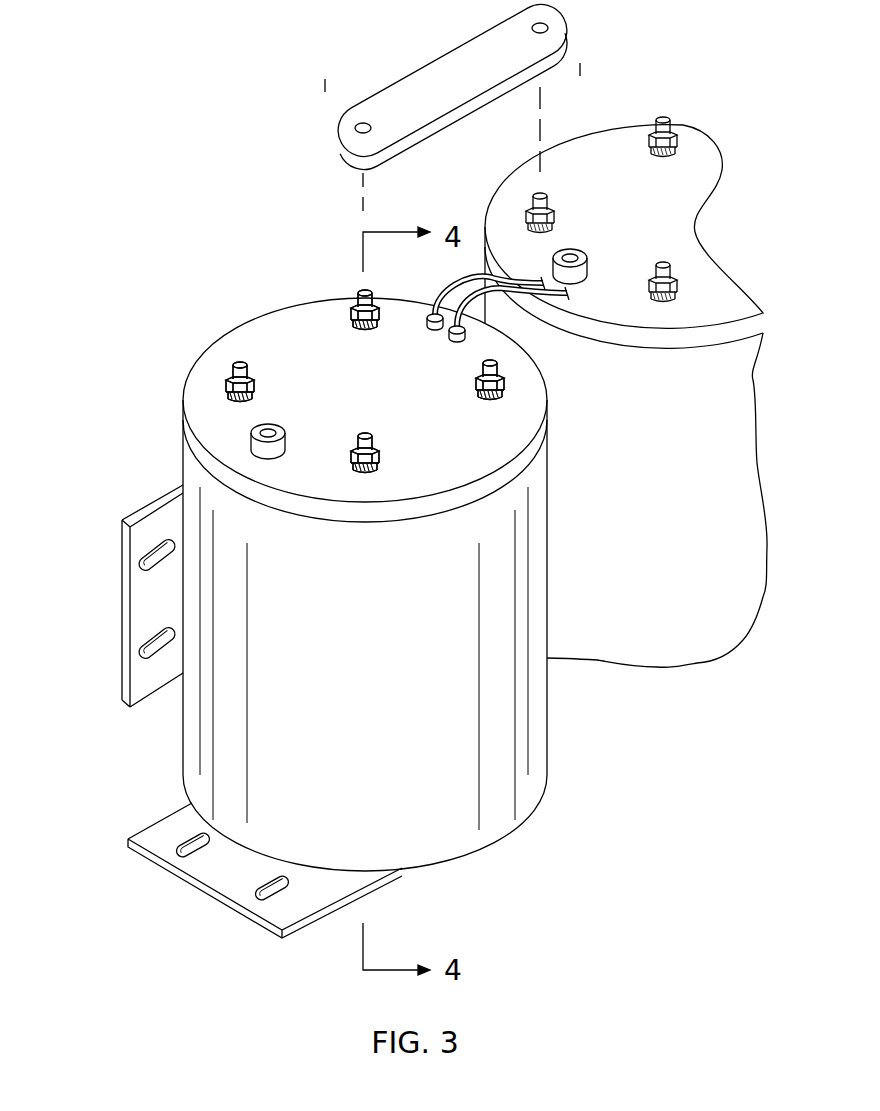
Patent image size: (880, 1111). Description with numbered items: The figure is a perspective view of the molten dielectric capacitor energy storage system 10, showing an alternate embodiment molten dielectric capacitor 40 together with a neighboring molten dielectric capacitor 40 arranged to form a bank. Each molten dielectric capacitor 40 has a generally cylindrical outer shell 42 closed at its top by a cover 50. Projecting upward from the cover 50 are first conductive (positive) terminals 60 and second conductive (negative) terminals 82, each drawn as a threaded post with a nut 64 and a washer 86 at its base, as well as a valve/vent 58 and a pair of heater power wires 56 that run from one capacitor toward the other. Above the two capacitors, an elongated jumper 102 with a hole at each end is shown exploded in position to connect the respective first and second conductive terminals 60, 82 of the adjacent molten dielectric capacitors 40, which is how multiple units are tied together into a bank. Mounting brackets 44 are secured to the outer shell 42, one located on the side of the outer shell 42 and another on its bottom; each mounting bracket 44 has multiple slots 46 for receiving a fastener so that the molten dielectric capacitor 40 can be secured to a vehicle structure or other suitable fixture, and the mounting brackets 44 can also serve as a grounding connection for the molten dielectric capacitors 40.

The capacitor assembly 10 is at (122, 82).
The molten dielectric capacitor 40 is at (227, 320).
The outer shell 42 is at (413, 834).
The mounting brackets 44 is at (122, 562).
The slots 46 is at (152, 637).
The cover 50 is at (298, 487).
The heater power wires 56 is at (427, 291).
The valve/vent 58 is at (252, 440).
The first conductive terminals 60 is at (358, 297).
The nut 64 is at (350, 322).
The second conductive terminals 82 is at (232, 365).
The washer 86 is at (229, 395).
The jumpers 102 is at (410, 90).